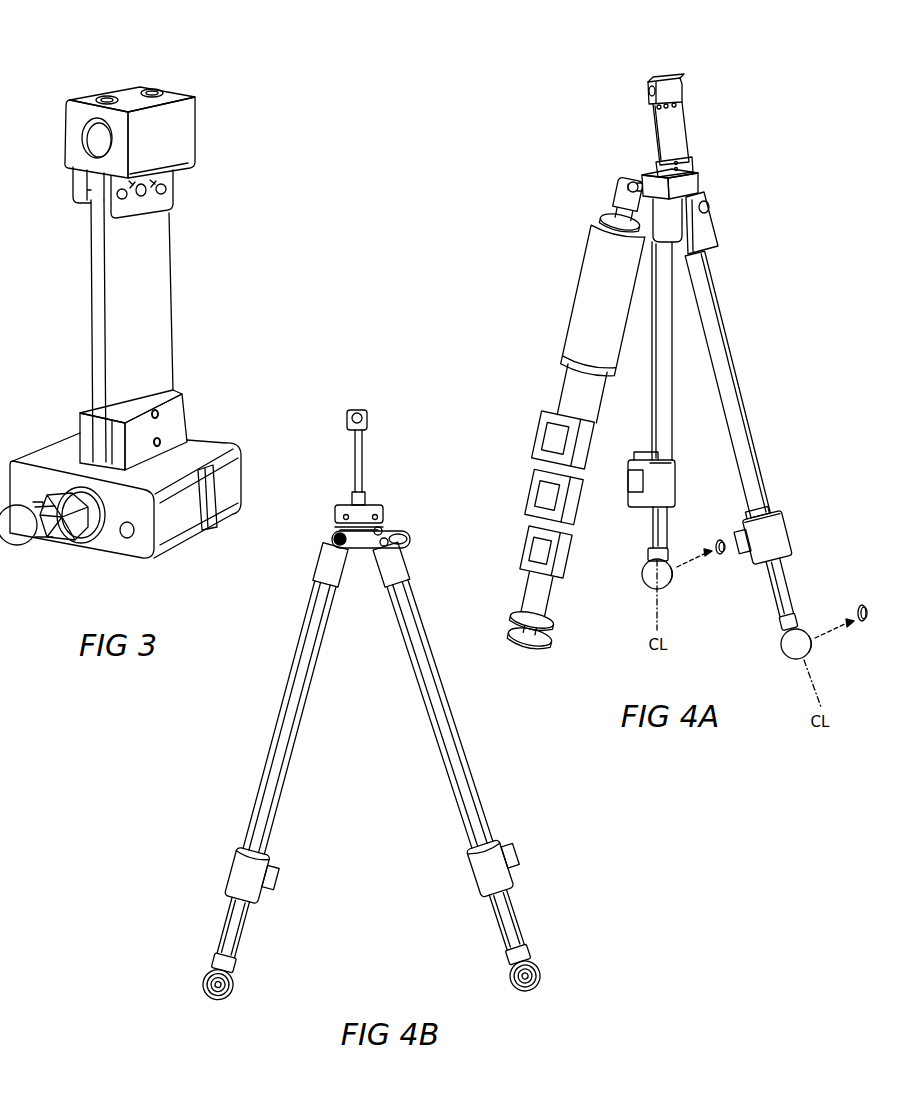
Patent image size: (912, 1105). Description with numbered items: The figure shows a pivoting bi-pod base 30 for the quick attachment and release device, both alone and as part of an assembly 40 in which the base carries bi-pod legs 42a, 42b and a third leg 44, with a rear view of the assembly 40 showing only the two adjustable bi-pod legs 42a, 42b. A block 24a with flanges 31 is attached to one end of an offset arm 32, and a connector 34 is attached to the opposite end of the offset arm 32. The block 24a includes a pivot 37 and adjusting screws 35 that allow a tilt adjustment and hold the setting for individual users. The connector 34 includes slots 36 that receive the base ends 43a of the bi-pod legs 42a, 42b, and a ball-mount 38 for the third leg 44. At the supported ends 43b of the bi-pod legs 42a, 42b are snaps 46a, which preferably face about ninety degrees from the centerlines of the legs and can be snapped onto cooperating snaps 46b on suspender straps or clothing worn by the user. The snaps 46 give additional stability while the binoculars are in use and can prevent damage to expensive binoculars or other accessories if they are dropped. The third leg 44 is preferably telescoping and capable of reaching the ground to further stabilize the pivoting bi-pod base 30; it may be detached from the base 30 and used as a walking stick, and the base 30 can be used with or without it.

In FIG. 3, the block 24a is at (163, 135).
In FIG. 3, the pivoting bi-pod base 30 is at (264, 252).
In FIG. 4A, the pivoting bi-pod base 30 is at (672, 130).
In FIG. 4B, the pivoting bi-pod base 30 is at (362, 456).
In FIG. 3, the flanges 31 is at (133, 210).
In FIG. 3, the offset arm 32 is at (122, 310).
In FIG. 3, the connector 34 is at (185, 457).
In FIG. 3, the adjusting screws 35 is at (110, 98).
In FIG. 3, the slots 36 is at (210, 512).
In FIG. 3, the pivot 37 is at (167, 190).
In FIG. 3, the ball-mount 38 is at (25, 535).
In FIG. 4A, the assembly 40 is at (561, 125).
In FIG. 4B, the assembly 40 is at (177, 789).
In FIG. 4A, the bi-pod leg 42a is at (663, 382).
In FIG. 4B, the bi-pod leg 42a is at (290, 718).
In FIG. 4A, the bi-pod leg 42b is at (723, 330).
In FIG. 4B, the bi-pod leg 42b is at (468, 799).
In FIG. 4A, the base ends 43a is at (697, 230).
In FIG. 4A, the supported ends 43b is at (790, 650).
In FIG. 4A, the third leg 44 is at (600, 282).
In FIG. 4B, the snaps 46 is at (223, 1000).
In FIG. 4A, the snaps 46a is at (677, 570).
In FIG. 4A, the cooperating snaps 46b is at (720, 560).